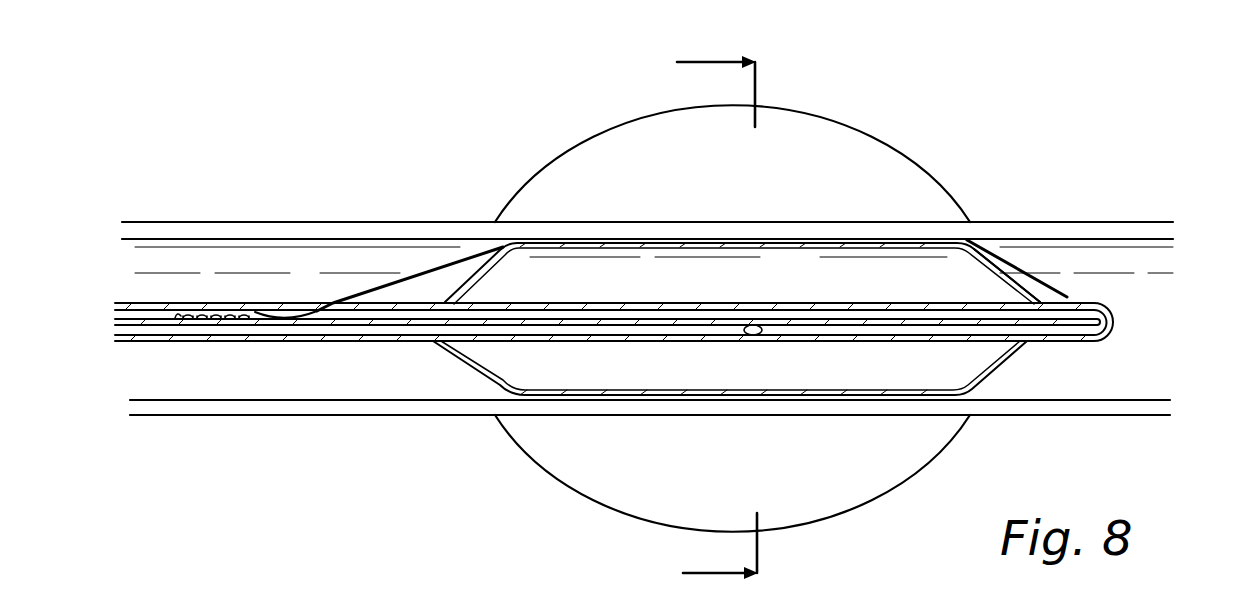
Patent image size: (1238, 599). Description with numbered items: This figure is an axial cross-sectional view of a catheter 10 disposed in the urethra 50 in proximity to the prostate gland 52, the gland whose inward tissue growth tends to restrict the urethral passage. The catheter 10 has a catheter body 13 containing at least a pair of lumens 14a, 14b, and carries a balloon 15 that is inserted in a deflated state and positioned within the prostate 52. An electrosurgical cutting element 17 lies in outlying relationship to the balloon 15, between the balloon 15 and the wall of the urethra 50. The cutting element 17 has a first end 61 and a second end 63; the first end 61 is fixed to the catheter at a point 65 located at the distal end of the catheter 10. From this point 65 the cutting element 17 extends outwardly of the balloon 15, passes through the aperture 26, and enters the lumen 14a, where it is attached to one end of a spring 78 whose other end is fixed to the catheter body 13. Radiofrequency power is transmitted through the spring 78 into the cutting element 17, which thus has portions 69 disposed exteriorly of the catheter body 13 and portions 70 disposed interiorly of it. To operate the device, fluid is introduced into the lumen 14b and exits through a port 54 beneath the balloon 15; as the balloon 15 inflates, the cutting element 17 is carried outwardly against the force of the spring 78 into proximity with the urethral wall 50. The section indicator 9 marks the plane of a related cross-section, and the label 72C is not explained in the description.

The catheter 10 is at (1160, 268).
The catheter body 13 is at (135, 303).
The lumen 14a is at (255, 284).
The lumen 14b is at (263, 330).
The balloon 15 is at (473, 372).
The electrosurgical cutting element 17 is at (1020, 277).
The aperture 26 is at (333, 303).
The urethra 50 is at (330, 415).
The prostate gland 52 is at (617, 137).
The port 54 is at (750, 336).
The first end 61 is at (1060, 287).
The second end 63 is at (183, 317).
The point 65 is at (1074, 297).
The portions 69 is at (444, 240).
The portions 70 is at (305, 292).
The spring 78 is at (190, 303).
The conductor 72C is at (349, 594).
The section line 9 is at (732, 319).